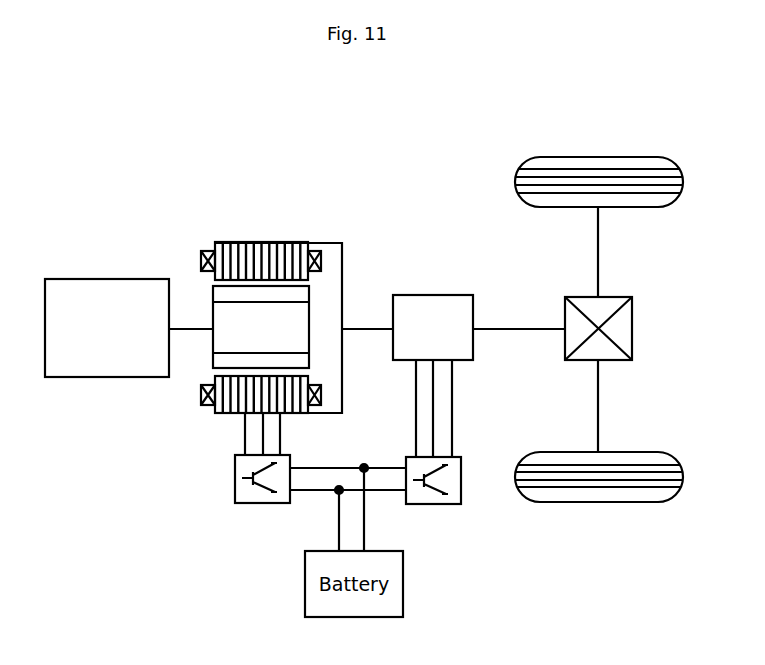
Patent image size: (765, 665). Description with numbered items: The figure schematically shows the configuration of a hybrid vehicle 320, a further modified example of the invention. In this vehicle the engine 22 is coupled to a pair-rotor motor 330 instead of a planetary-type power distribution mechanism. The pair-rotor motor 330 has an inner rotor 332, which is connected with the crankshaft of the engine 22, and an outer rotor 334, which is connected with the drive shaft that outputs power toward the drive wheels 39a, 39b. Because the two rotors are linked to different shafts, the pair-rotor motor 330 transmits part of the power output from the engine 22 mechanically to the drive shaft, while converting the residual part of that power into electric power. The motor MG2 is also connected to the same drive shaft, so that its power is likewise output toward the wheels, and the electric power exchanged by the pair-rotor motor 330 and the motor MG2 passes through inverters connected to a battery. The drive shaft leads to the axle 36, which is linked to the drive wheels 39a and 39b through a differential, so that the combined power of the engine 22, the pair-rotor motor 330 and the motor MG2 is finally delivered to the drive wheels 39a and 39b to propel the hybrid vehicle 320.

The engine 22 is at (106, 377).
The hybrid vehicle 320 is at (401, 147).
The pair-rotor motor 330 is at (267, 148).
The inner rotor 332 is at (213, 312).
The outer rotor 334 is at (265, 243).
The motor MG2 is at (432, 295).
The axle 36 is at (600, 241).
The drive wheel 39a is at (598, 157).
The drive wheel 39b is at (598, 502).